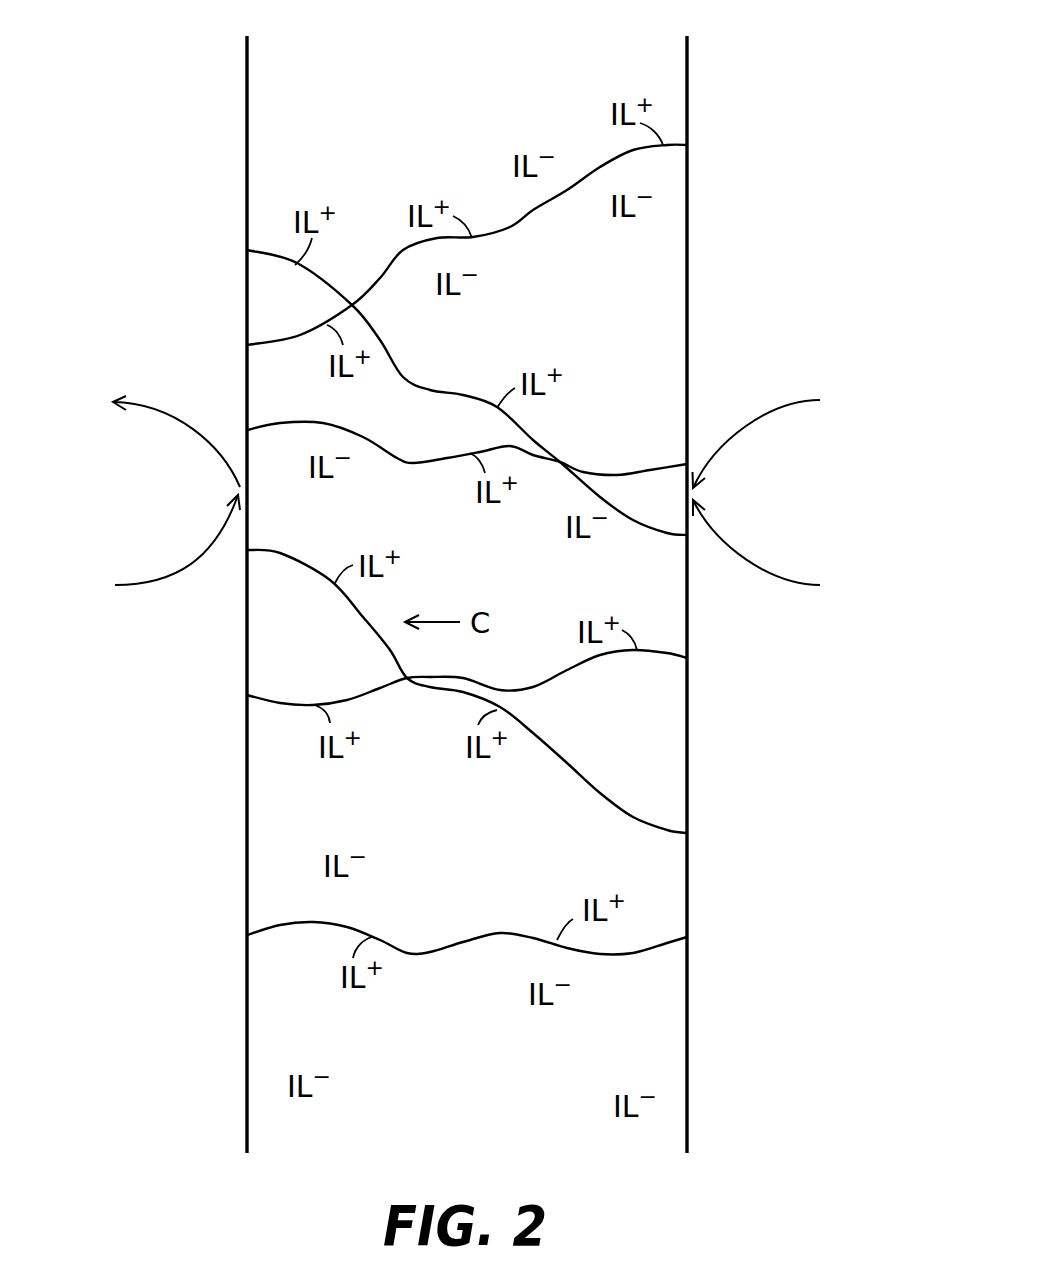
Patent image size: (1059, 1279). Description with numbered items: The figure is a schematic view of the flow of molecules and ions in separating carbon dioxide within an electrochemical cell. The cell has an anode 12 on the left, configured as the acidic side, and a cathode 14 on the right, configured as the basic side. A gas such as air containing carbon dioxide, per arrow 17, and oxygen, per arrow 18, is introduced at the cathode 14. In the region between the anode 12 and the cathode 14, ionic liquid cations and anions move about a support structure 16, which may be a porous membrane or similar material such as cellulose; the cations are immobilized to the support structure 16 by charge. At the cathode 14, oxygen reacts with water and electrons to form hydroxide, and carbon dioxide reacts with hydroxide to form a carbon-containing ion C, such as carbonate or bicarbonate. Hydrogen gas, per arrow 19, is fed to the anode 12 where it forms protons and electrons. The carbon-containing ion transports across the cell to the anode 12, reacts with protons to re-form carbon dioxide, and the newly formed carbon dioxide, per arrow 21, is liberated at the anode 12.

The anode 12 is at (245, 1032).
The cathode 14 is at (689, 67).
The support structure 16 is at (640, 953).
The arrow indicating CO2 introduced at the cathode 17 is at (763, 412).
The arrow indicating O2 introduced at the cathode 18 is at (763, 573).
The arrow indicating hydrogen gas fed to the anode 19 is at (157, 580).
The arrow indicating CO2 liberated at the anode 21 is at (187, 425).